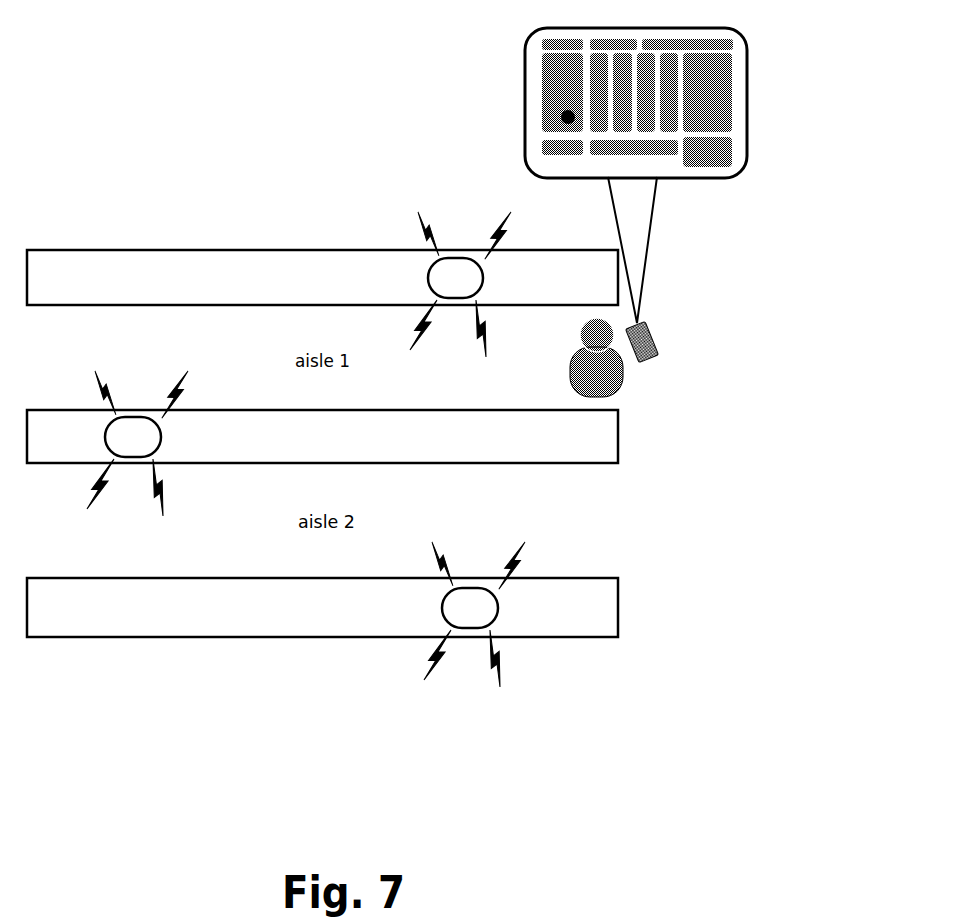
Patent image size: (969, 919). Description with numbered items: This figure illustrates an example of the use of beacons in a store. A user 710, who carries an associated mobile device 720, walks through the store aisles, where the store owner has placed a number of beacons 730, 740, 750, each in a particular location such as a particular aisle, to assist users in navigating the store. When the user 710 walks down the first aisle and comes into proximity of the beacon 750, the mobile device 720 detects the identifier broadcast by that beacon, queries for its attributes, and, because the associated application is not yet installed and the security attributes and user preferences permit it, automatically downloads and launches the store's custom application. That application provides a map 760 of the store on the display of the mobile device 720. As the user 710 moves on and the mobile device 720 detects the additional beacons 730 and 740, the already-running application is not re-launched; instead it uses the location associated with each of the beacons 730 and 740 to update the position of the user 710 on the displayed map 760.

The user 710 is at (563, 372).
The mobile device 720 is at (652, 332).
The beacon 730 is at (500, 609).
The beacon 740 is at (163, 435).
The beacon 750 is at (483, 279).
The map 760 is at (533, 32).